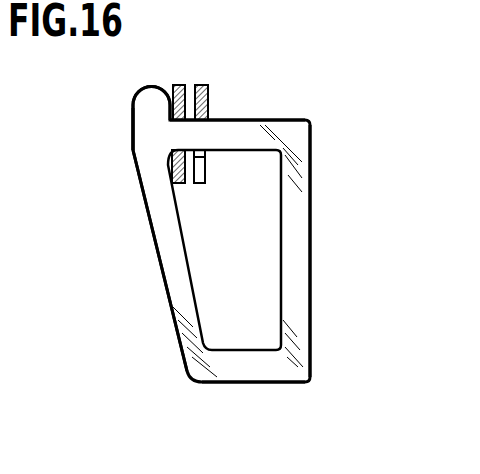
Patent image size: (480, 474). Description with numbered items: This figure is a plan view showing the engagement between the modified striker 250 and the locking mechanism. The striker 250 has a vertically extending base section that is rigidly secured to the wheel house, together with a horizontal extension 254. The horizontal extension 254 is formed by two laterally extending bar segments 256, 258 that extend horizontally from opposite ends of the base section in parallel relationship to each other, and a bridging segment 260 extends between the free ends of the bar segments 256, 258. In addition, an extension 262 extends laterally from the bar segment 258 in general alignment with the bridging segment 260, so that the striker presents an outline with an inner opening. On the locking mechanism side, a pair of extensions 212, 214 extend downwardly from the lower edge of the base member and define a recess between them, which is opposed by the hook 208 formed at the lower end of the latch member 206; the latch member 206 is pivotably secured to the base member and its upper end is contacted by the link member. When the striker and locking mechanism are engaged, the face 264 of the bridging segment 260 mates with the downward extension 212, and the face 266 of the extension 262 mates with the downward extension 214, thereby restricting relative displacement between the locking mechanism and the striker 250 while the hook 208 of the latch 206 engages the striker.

The striker 250 is at (163, 301).
The horizontal extension 254 is at (300, 232).
The bar segment 256 is at (253, 368).
The bar segment 258 is at (232, 128).
The bridging segment 260 is at (172, 266).
The extension 262 is at (140, 108).
The face 264 is at (264, 281).
The face 266 is at (172, 112).
The extension 214 is at (178, 85).
The latch member 206 is at (203, 85).
The extension 212 is at (172, 172).
The hook 208 is at (209, 160).